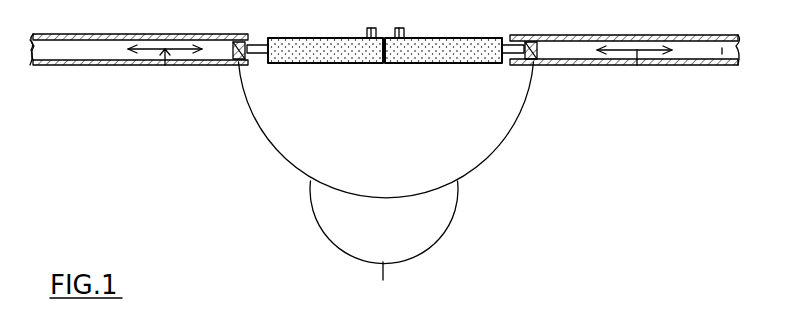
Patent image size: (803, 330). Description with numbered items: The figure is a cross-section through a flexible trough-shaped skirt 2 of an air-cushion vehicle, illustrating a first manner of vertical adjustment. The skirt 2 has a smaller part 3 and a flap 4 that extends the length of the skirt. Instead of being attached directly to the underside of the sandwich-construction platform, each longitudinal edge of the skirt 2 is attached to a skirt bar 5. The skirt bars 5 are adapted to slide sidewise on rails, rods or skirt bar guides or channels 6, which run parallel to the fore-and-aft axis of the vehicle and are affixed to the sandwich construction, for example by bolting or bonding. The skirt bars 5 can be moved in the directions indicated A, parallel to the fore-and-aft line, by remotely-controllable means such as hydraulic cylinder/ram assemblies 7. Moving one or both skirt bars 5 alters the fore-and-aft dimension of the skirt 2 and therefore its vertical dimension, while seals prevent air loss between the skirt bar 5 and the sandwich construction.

The flexible trough-shaped skirt 2 is at (275, 156).
The smaller part 3 is at (440, 237).
The flap 4 is at (381, 270).
The skirt bar 5 is at (246, 64).
The skirt bar guide 6 is at (55, 66).
The hydraulic cylinder/ram assembly 7 is at (340, 68).
The directions of movement A is at (157, 65).